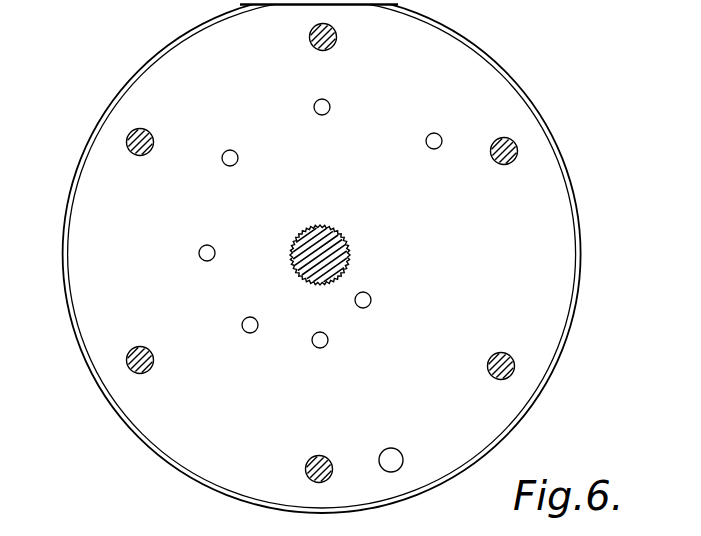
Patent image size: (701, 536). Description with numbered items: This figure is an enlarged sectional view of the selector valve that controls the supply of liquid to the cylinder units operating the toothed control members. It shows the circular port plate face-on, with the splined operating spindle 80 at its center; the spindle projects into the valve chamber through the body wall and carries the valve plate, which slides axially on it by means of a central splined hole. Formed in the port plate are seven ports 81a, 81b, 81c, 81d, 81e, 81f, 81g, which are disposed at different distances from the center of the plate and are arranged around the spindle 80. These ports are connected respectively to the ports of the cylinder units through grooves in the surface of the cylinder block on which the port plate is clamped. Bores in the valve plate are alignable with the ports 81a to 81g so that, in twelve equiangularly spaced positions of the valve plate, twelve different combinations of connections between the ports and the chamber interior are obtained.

The splined operating spindle 80 is at (335, 252).
The port 81a is at (370, 305).
The port 81b is at (326, 347).
The port 81c is at (243, 331).
The port 81d is at (200, 258).
The port 81e is at (224, 153).
The port 81f is at (316, 101).
The port 81g is at (439, 135).